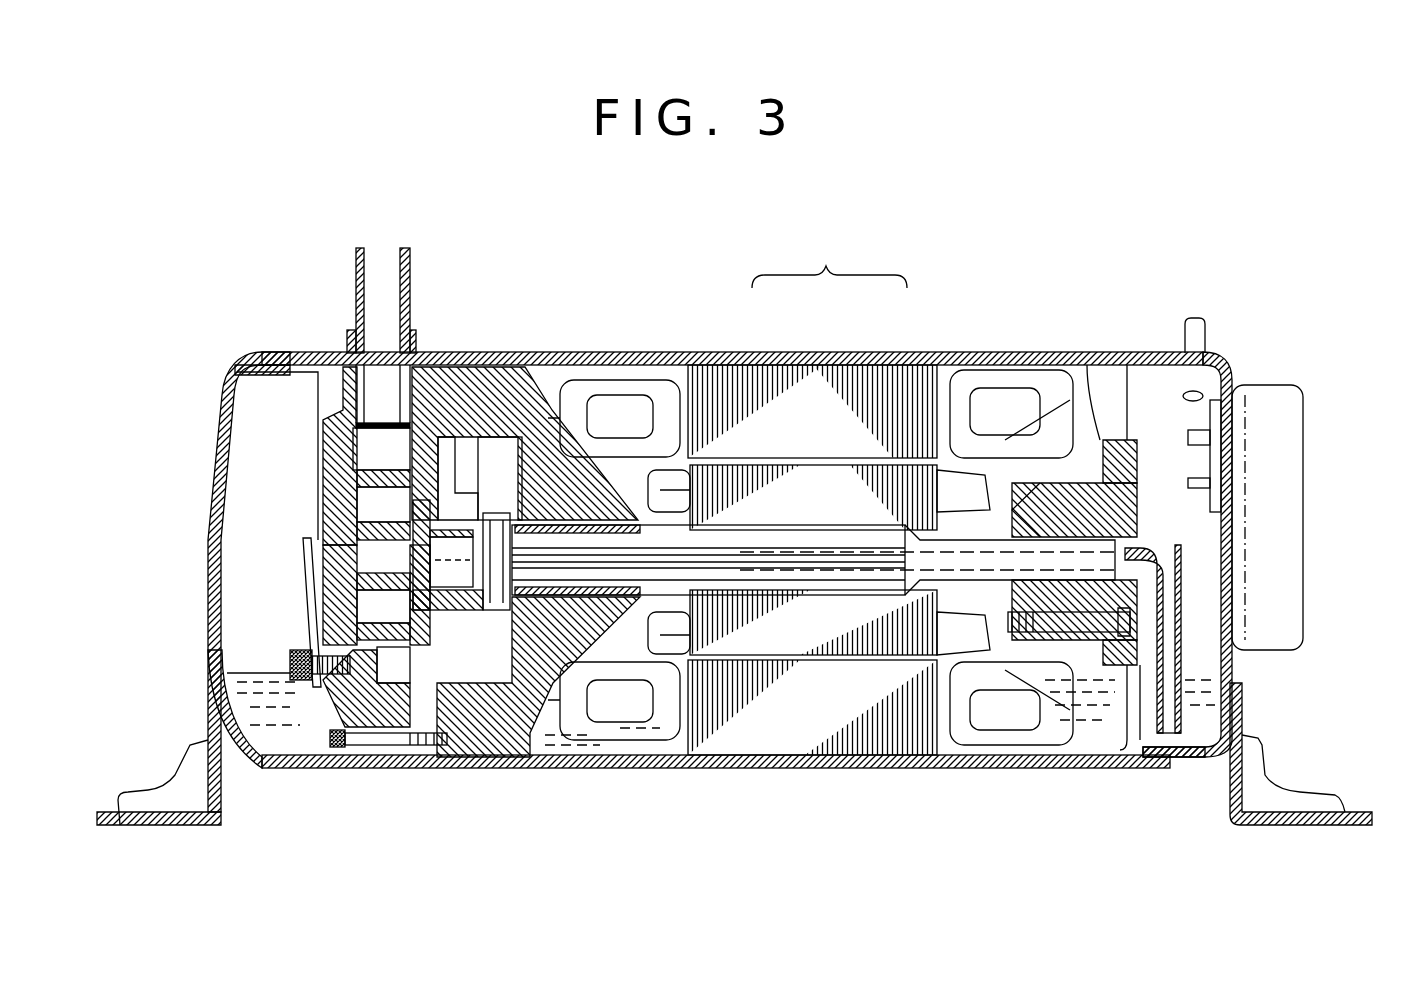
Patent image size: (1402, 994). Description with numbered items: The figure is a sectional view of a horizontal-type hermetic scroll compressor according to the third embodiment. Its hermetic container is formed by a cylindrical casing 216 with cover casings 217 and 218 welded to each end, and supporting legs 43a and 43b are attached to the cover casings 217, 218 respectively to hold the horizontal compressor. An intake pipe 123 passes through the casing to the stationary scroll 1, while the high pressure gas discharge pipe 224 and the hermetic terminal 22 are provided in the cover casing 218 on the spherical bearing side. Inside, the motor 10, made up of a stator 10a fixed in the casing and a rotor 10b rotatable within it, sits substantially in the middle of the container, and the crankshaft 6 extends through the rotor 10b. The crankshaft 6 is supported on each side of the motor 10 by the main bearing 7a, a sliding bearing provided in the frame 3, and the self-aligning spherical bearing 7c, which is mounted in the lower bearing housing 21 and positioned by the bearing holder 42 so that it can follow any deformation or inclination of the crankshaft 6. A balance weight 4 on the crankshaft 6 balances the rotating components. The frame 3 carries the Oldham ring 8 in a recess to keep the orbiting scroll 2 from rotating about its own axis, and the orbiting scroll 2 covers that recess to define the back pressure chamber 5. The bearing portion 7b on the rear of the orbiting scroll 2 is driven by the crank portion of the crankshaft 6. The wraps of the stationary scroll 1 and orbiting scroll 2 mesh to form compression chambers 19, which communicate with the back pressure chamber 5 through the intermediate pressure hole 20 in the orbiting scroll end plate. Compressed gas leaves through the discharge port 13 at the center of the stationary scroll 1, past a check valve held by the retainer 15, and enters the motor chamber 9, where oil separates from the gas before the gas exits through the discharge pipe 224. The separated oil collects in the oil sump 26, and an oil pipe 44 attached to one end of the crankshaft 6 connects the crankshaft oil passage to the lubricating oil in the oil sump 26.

The stationary scroll 1 is at (323, 440).
The orbiting scroll 2 is at (430, 460).
The frame 3 is at (455, 372).
The balance weight 4 is at (498, 690).
The back pressure chamber 5 is at (498, 460).
The crankshaft 6 is at (652, 545).
The main bearing 7a is at (600, 700).
The bearing portion 7b is at (330, 586).
The self-aligning bearing 7c is at (1025, 480).
The Oldham ring 8 is at (457, 748).
The motor chamber 9 is at (640, 475).
The motor 10 is at (812, 490).
The stator 10a is at (815, 385).
The rotor 10b is at (885, 405).
The discharge port 13 is at (308, 552).
The retainer 15 is at (325, 590).
The compression chambers 19 is at (385, 510).
The intermediate pressure hole 20 is at (345, 500).
The lower bearing housing 21 is at (1058, 665).
The hermetic terminal 22 is at (1227, 455).
The oil sump 26 is at (583, 745).
The bearing holder 42 is at (1072, 485).
The oil pipe 44 is at (1198, 640).
The intake pipe 123 is at (357, 290).
The cylindrical casing 216 is at (738, 770).
The cover casing 217 is at (210, 440).
The cover casing 218 is at (1235, 600).
The high pressure gas discharge pipe 224 is at (1200, 330).
The supporting leg 43a is at (147, 826).
The supporting leg 43b is at (1250, 826).